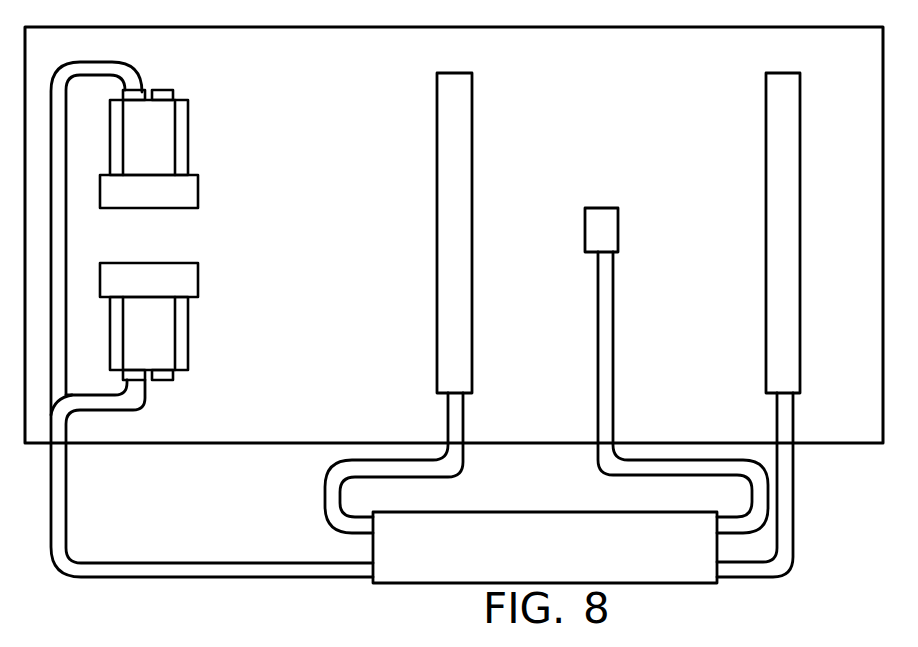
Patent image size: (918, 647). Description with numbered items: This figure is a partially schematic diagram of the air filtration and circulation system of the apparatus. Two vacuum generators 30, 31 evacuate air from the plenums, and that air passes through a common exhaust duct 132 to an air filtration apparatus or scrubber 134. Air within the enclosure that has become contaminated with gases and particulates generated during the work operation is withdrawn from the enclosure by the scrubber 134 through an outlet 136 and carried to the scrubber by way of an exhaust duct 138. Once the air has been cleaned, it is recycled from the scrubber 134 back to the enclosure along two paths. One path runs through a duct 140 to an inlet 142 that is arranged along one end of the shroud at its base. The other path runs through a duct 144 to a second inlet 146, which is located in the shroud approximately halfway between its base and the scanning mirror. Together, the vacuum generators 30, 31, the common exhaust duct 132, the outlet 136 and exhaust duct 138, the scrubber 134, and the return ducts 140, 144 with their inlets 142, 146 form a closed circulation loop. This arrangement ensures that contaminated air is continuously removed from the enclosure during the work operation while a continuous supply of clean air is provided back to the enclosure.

The vacuum generator 30 is at (198, 278).
The vacuum generator 31 is at (198, 193).
The common exhaust duct 132 is at (68, 483).
The air filtration apparatus or scrubber 134 is at (537, 511).
The outlet 136 is at (436, 207).
The exhaust duct 138 is at (325, 498).
The duct 140 is at (793, 516).
The inlet 142 is at (800, 203).
The duct 144 is at (648, 381).
The second inlet 146 is at (658, 214).